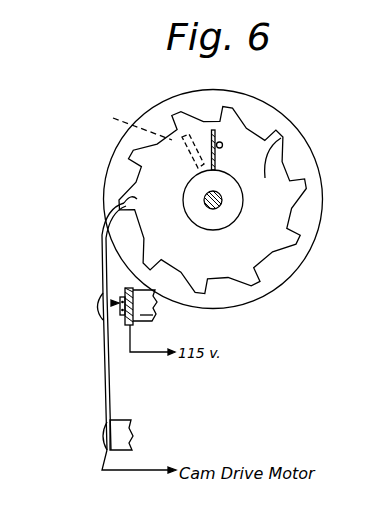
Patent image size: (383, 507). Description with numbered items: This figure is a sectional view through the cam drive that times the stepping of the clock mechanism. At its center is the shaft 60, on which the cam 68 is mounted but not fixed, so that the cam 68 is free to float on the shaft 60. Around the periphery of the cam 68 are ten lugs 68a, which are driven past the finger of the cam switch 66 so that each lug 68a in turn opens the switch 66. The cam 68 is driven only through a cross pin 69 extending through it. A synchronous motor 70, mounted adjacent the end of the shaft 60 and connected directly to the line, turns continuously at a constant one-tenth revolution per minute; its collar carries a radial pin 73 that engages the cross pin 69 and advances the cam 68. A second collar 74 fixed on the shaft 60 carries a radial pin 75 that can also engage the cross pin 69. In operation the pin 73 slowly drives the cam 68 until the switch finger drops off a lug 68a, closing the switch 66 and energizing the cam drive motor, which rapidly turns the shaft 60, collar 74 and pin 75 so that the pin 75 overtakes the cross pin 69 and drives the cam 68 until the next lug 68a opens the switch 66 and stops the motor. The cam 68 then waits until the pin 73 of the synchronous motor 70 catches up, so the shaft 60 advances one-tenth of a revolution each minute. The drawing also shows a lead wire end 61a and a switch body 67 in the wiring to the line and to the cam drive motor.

The synchronous motor 70 is at (280, 119).
The cam 68 is at (222, 259).
The lugs 68a is at (297, 188).
The second collar 74 is at (236, 216).
The shaft 60 is at (204, 201).
The cross pin 69 is at (222, 146).
The radial pin 75 is at (210, 158).
The radial pin 73 is at (134, 125).
The lead wire end 61a is at (104, 207).
The cam switch 66 is at (107, 342).
The switch 67 is at (156, 322).